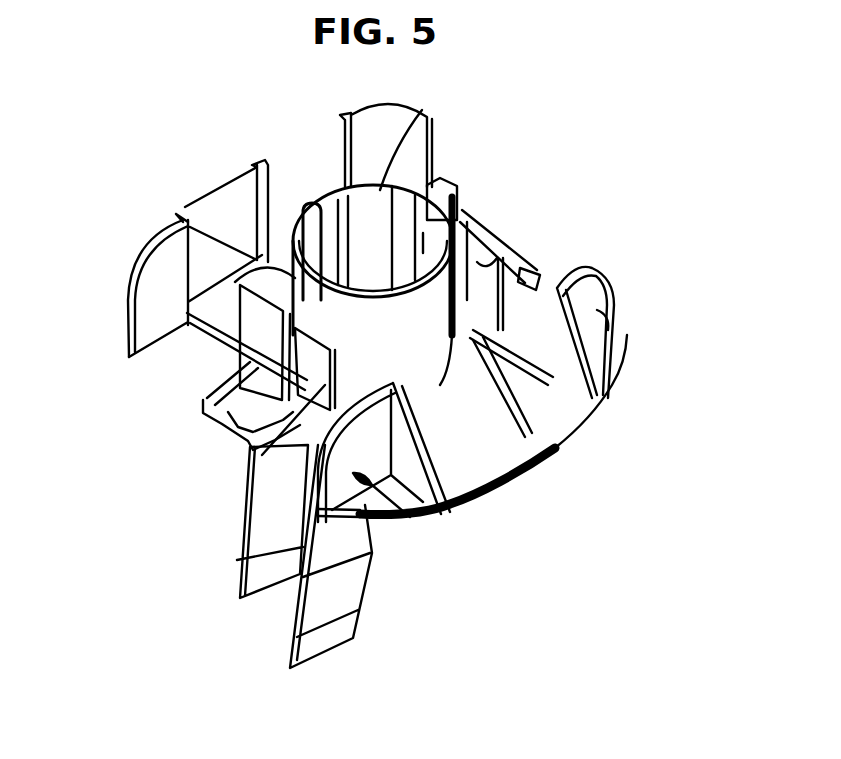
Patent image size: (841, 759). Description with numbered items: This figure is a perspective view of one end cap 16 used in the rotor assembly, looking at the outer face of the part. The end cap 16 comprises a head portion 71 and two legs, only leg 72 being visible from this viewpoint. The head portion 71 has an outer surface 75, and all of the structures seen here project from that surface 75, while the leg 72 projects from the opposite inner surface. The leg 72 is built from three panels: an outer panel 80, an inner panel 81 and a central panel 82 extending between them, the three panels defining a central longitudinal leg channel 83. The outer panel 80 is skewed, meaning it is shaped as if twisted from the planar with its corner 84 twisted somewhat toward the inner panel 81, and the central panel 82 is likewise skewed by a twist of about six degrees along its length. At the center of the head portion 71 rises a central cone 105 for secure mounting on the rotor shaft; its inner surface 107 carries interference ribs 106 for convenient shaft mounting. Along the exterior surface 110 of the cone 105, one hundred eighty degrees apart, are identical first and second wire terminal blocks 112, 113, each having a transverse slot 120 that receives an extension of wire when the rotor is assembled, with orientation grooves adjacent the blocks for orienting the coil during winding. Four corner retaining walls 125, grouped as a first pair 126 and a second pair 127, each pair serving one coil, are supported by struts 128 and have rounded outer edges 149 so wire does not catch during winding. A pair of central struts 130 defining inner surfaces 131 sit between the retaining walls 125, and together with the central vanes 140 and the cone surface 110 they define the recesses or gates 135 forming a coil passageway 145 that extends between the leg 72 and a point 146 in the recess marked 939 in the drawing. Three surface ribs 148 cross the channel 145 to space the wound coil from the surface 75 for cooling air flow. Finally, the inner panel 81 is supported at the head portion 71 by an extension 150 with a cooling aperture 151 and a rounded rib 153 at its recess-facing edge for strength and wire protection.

The end cap 16 is at (143, 137).
The head portion 71 is at (527, 500).
The first leg 72 is at (250, 548).
The outer surface 75 is at (587, 412).
The outer panel 80 is at (335, 638).
The inner panel 81 is at (247, 605).
The central panel 82 is at (298, 610).
The central longitudinal leg channel 83 is at (265, 513).
The corner 84 is at (292, 666).
The central cone 105 is at (340, 213).
The interference ribs 106 is at (310, 200).
The inner surface 107 is at (400, 123).
The exterior surface 110 is at (402, 321).
The first wire terminal block 112 is at (255, 272).
The second wire terminal block 113 is at (468, 202).
The longitudinal slot 120 is at (466, 222).
The corner retaining wall 125 is at (403, 112).
The first pair of retaining walls 126 is at (395, 100).
The second pair of retaining walls 127 is at (615, 330).
The struts 128 is at (340, 135).
The central strut 130 is at (245, 185).
The inner surface 131 is at (265, 212).
The gate 135 is at (522, 328).
The central vanes 140 is at (498, 258).
The coil passageway 145 is at (582, 443).
The point 146 is at (525, 325).
The surface ribs 148 is at (580, 448).
The rounded outer edges 149 is at (147, 252).
The extension 150 is at (230, 443).
The aperture 151 is at (230, 440).
The rounded rib 153 is at (210, 387).
The wall segment 939 is at (618, 308).